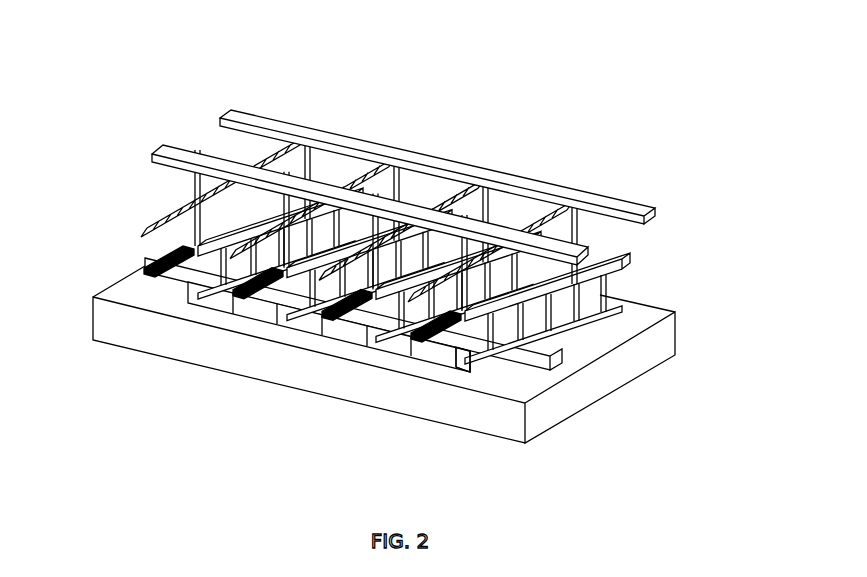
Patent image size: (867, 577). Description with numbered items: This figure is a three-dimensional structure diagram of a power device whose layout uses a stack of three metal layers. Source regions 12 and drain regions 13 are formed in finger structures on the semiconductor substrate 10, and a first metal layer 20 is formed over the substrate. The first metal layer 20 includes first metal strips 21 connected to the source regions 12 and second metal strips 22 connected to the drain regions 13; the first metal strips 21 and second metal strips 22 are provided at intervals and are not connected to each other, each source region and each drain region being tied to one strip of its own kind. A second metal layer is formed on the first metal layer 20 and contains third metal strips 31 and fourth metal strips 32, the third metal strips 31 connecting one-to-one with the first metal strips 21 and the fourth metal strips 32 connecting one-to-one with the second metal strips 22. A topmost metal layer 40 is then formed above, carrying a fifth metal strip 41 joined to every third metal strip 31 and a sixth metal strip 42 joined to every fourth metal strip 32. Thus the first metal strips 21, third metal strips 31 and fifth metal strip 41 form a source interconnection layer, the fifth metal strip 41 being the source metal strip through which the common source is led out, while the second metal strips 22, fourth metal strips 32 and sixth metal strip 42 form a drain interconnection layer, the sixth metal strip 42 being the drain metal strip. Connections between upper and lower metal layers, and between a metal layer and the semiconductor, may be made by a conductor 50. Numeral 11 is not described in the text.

The semiconductor substrate 10 is at (657, 348).
The support block 11 is at (470, 370).
The source region 12 is at (450, 363).
The drain region 13 is at (493, 373).
The first metal layer 20 is at (347, 297).
The first metal strip 21 is at (120, 288).
The second metal strip 22 is at (170, 277).
The third metal strip 31 is at (143, 234).
The fourth metal strip 32 is at (150, 248).
The topmost metal layer 40 is at (355, 186).
The fifth metal strip 41 is at (158, 156).
The sixth metal strip 42 is at (225, 117).
The conductor 50 is at (263, 307).